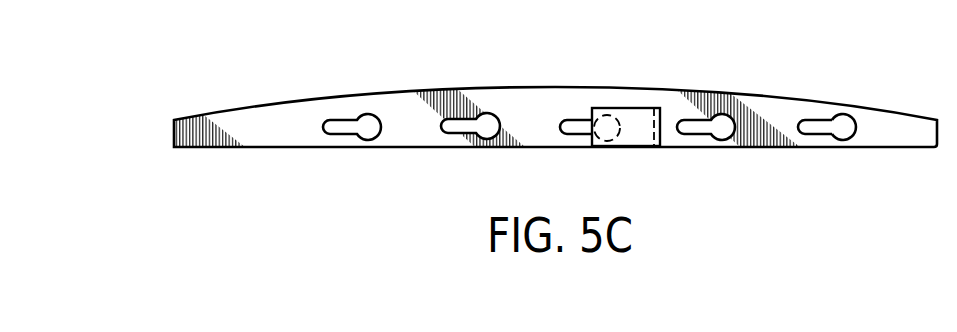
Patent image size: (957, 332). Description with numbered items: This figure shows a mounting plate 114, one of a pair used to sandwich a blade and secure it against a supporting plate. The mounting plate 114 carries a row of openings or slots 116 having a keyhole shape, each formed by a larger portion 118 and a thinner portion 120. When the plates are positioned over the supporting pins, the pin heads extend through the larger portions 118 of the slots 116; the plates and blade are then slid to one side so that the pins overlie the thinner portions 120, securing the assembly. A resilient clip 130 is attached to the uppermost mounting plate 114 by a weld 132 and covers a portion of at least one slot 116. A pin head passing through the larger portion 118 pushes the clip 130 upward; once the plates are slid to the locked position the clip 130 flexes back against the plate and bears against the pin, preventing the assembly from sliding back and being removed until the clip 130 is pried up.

The mounting plate 114 is at (545, 127).
The slot 116 is at (343, 138).
The larger portion of slot 118 is at (860, 155).
The thinner portion of slot 120 is at (828, 155).
The clip 130 is at (632, 137).
The weld 132 is at (657, 135).